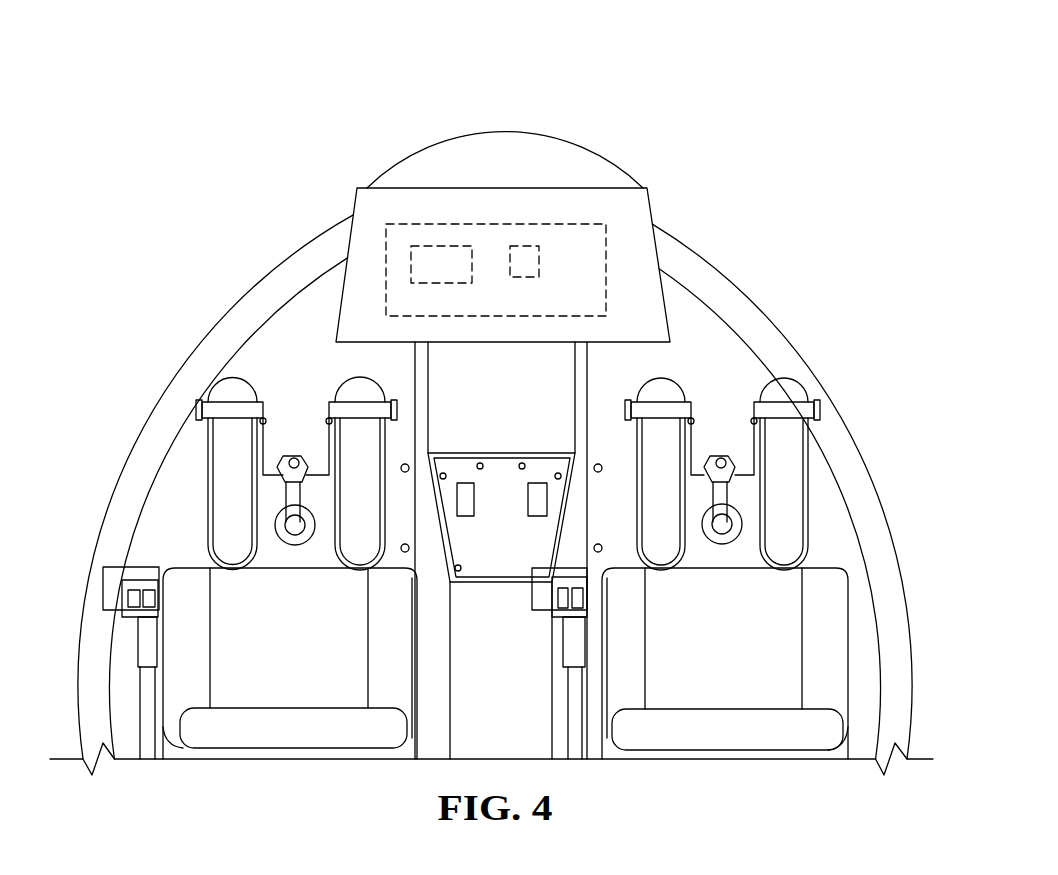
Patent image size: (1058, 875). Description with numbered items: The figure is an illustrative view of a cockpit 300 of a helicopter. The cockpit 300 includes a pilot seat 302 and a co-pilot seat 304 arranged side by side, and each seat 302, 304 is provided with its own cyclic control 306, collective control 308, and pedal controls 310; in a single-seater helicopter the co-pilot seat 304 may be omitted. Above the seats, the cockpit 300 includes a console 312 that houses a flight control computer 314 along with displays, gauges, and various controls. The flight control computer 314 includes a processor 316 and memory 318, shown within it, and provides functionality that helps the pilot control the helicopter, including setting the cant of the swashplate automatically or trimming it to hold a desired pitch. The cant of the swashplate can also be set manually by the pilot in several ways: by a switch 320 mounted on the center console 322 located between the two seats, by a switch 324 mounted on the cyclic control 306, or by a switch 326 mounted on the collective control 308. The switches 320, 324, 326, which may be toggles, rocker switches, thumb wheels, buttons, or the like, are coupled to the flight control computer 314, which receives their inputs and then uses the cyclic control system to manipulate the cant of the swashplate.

The cockpit 300 is at (157, 81).
The pilot seat 302 is at (268, 656).
The co-pilot seat 304 is at (701, 683).
The cyclic control 306 is at (289, 455).
The collective control 308 is at (117, 567).
The pedal controls 310 is at (208, 453).
The console 312 is at (350, 218).
The flight control computer 314 is at (570, 224).
The processor 316 is at (440, 246).
The memory 318 is at (523, 246).
The switch 320 is at (467, 482).
The center console 322 is at (481, 700).
The switch 324 is at (280, 497).
The switch 326 is at (125, 600).